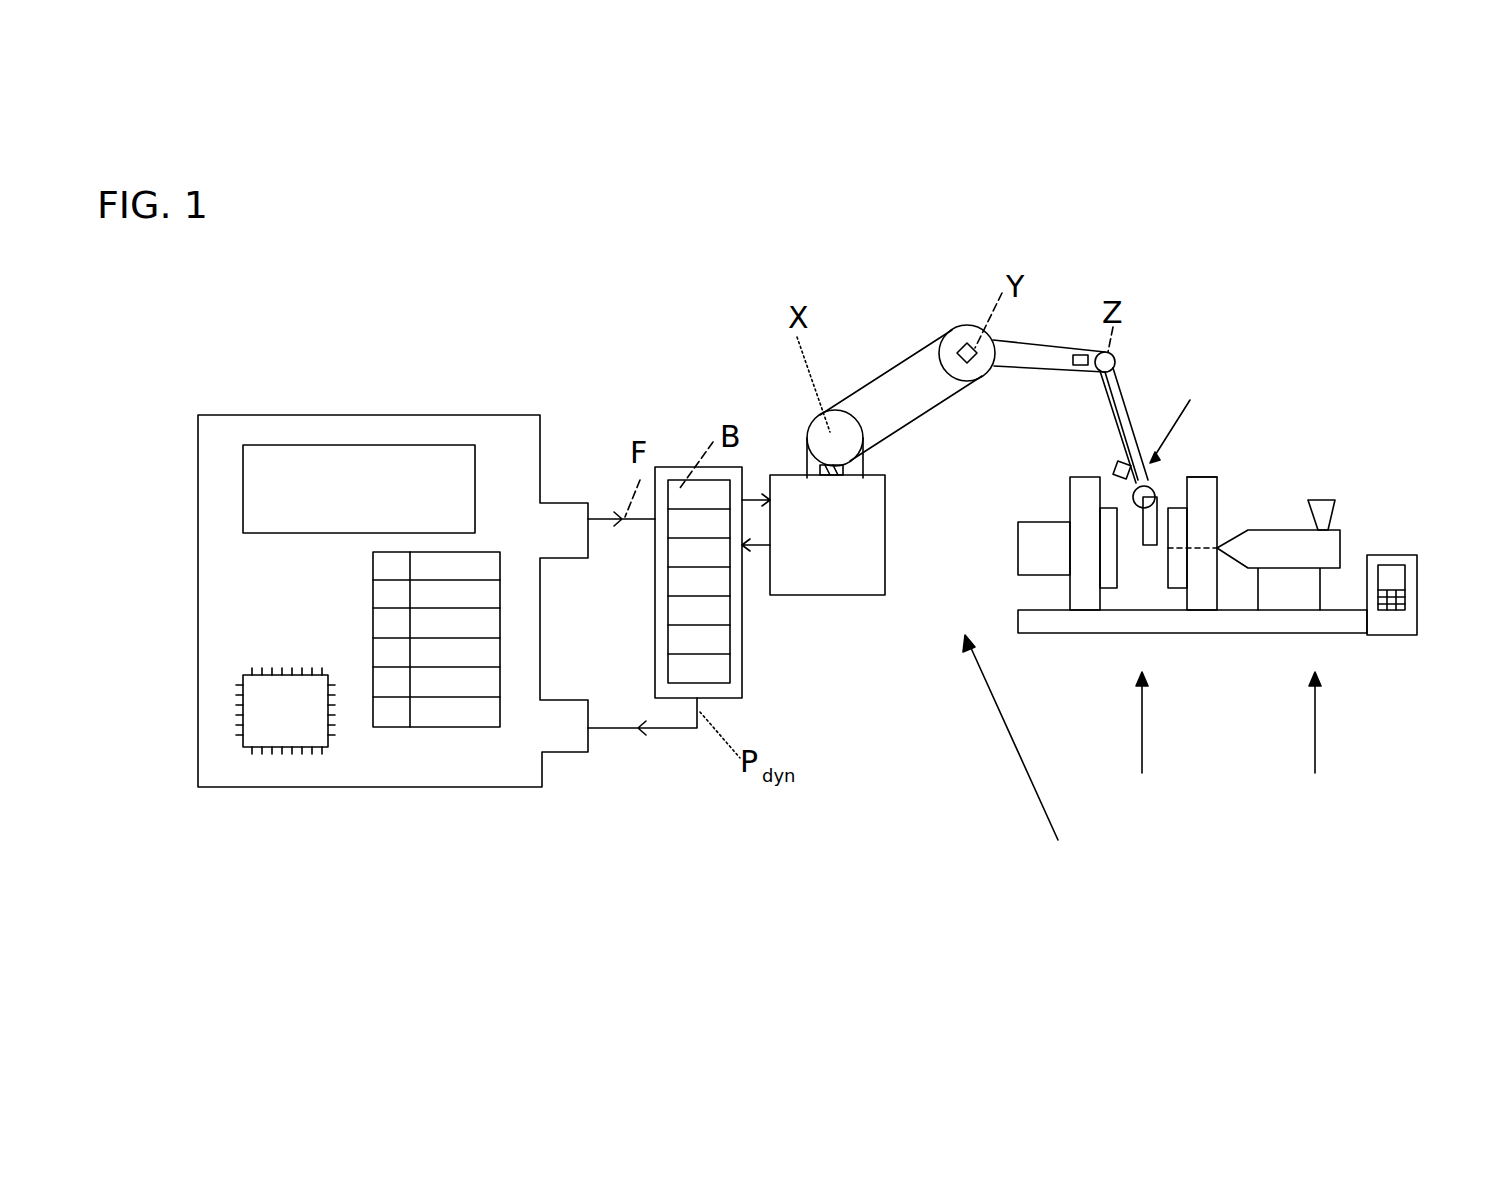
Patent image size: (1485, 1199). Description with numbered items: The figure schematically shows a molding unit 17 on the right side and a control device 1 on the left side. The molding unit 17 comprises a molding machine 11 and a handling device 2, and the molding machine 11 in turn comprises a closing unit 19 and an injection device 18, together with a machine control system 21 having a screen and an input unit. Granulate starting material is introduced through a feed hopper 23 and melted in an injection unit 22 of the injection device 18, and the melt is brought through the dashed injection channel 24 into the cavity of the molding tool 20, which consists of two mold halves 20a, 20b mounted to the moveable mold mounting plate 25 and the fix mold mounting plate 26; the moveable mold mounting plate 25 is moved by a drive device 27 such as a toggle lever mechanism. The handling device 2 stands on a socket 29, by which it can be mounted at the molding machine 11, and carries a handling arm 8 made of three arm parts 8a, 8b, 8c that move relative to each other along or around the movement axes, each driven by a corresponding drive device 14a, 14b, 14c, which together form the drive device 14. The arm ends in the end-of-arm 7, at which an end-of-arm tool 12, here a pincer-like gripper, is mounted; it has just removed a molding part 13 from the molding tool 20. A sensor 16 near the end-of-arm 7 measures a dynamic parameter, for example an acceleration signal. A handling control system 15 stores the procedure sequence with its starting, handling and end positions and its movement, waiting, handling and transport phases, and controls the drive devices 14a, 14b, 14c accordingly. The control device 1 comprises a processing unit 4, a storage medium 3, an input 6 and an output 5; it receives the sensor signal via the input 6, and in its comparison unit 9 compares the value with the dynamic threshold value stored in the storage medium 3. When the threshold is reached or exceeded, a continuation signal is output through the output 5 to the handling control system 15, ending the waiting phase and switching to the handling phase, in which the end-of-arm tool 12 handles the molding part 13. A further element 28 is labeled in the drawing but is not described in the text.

The control device 1 is at (338, 413).
The handling device 2 is at (1020, 757).
The storage medium 3 is at (438, 728).
The processing unit 4 is at (285, 728).
The output 5 is at (567, 517).
The input 6 is at (563, 733).
The end-of-arm 7 is at (1181, 418).
The handling arm 8 is at (989, 317).
The arm part 8a is at (900, 380).
The arm part 8b is at (1040, 360).
The arm part 8c is at (1127, 440).
The comparison unit 9 is at (275, 447).
The molding machine 11 is at (1320, 820).
The end-of-arm tool 12 is at (1148, 517).
The molding part 13 is at (1203, 498).
The drive device 14 is at (966, 426).
The drive device 14a is at (845, 465).
The drive device 14b is at (972, 357).
The drive device 14c is at (1084, 404).
The handling control system 15 is at (655, 580).
The sensor 16 is at (1138, 442).
The molding unit 17 is at (1237, 885).
The injection device 18 is at (1321, 745).
The closing unit 19 is at (1149, 745).
The molding tool 20 is at (1198, 643).
The mold half 20a is at (1110, 568).
The mold half 20b is at (1177, 573).
The machine control system 21 is at (1418, 623).
The injection unit 22 is at (1327, 553).
The feed hopper 23 is at (1325, 512).
The injection channel 24 is at (1213, 550).
The moveable mold mounting plate 25 is at (1080, 607).
The fix mold mounting plate 26 is at (1197, 548).
The drive device 27 is at (1047, 547).
The machine bed 28 is at (1340, 623).
The socket 29 is at (803, 577).